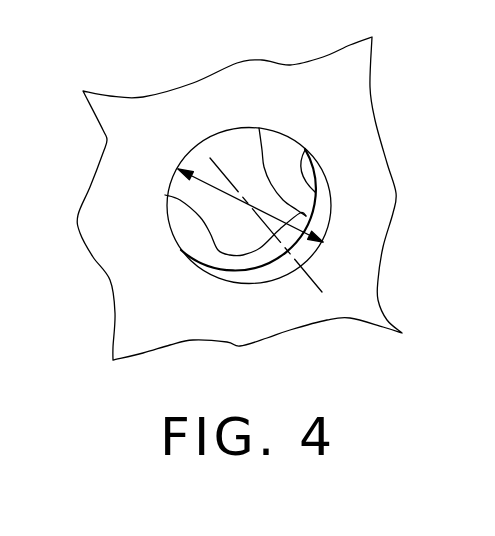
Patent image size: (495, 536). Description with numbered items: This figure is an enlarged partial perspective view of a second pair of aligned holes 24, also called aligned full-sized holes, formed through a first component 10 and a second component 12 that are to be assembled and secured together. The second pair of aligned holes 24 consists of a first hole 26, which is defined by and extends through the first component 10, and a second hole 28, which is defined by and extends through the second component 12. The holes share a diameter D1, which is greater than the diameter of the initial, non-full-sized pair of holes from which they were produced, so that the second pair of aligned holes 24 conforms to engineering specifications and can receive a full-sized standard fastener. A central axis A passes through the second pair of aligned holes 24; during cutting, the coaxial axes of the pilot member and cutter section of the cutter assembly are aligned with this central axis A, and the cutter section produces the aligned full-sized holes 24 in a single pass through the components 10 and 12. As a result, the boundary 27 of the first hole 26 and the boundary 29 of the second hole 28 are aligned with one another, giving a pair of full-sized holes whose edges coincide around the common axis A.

The first component 10 is at (173, 328).
The second component 12 is at (258, 128).
The second pair of aligned holes 24 is at (312, 137).
The first hole 26 is at (324, 214).
The boundary 27 is at (227, 275).
The second hole 28 is at (213, 250).
The boundary 29 is at (306, 151).
The diameter D1 is at (282, 282).
The central axis A is at (311, 278).